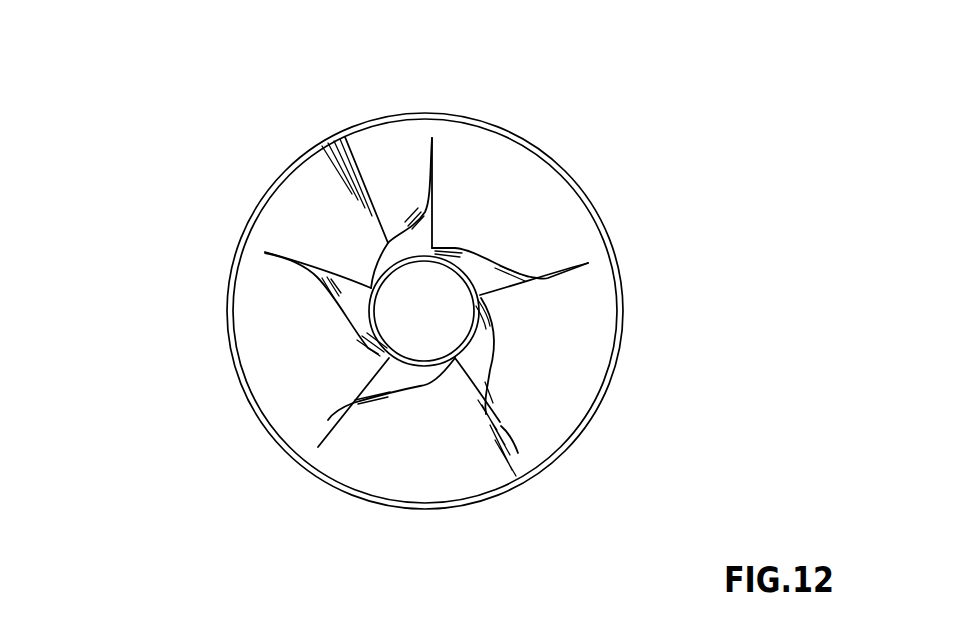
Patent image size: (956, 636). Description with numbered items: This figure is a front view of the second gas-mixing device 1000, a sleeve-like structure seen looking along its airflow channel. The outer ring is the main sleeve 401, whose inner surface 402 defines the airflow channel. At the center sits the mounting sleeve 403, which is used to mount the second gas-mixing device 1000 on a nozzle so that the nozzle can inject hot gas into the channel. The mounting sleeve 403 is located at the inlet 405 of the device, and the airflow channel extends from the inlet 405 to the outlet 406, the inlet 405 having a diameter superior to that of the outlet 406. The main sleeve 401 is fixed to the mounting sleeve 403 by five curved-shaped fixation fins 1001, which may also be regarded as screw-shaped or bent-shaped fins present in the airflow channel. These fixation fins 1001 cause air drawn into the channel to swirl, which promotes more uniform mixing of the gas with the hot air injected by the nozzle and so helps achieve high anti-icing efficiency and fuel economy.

The second gas-mixing device 1000 is at (200, 57).
The main sleeve 401 is at (238, 246).
The inner surface 402 is at (298, 202).
The mounting sleeve 403 is at (478, 330).
The inlet 405 is at (447, 534).
The outlet 406 is at (450, 326).
The fixation fins 1001 is at (327, 421).